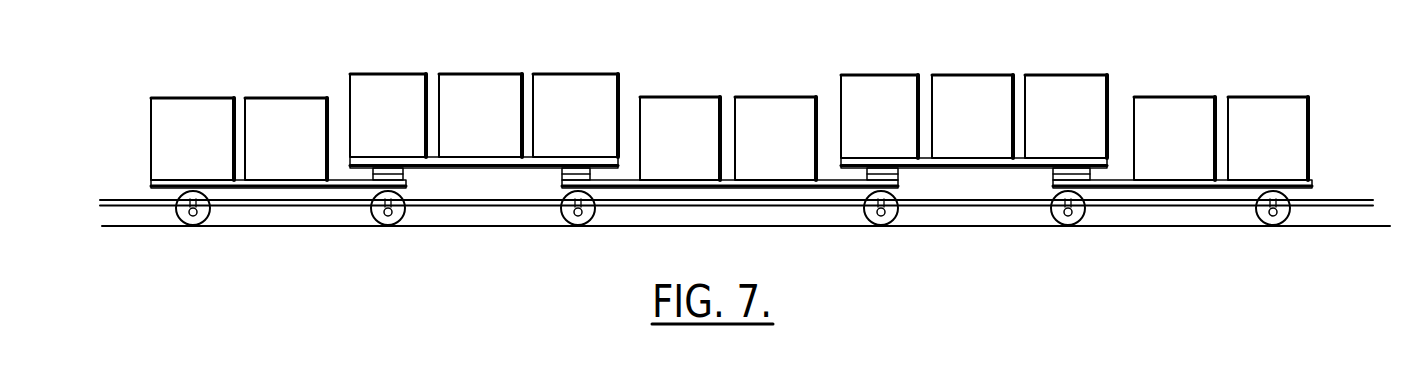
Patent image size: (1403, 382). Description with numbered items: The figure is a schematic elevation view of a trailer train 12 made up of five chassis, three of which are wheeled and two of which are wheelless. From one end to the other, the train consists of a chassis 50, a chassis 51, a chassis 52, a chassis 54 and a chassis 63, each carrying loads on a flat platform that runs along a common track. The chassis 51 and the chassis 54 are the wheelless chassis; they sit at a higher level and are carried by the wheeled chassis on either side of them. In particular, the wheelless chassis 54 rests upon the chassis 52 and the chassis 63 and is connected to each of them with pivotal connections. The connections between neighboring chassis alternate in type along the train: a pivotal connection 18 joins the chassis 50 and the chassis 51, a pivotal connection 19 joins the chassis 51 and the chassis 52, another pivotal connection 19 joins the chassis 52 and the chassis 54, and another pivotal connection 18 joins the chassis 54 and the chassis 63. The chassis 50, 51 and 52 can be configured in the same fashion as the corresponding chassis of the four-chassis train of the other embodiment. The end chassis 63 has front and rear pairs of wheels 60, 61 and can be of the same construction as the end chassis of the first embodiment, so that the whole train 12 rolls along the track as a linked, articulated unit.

The trailer train 12 is at (1022, 60).
The pivotal connection 18 is at (407, 169).
The pivotal connection 19 is at (574, 176).
The chassis 50 is at (308, 182).
The chassis 51 is at (535, 160).
The chassis 52 is at (790, 181).
The chassis 54 is at (984, 170).
The wheels 60 is at (1067, 222).
The wheels 61 is at (1272, 223).
The chassis 63 is at (1178, 184).